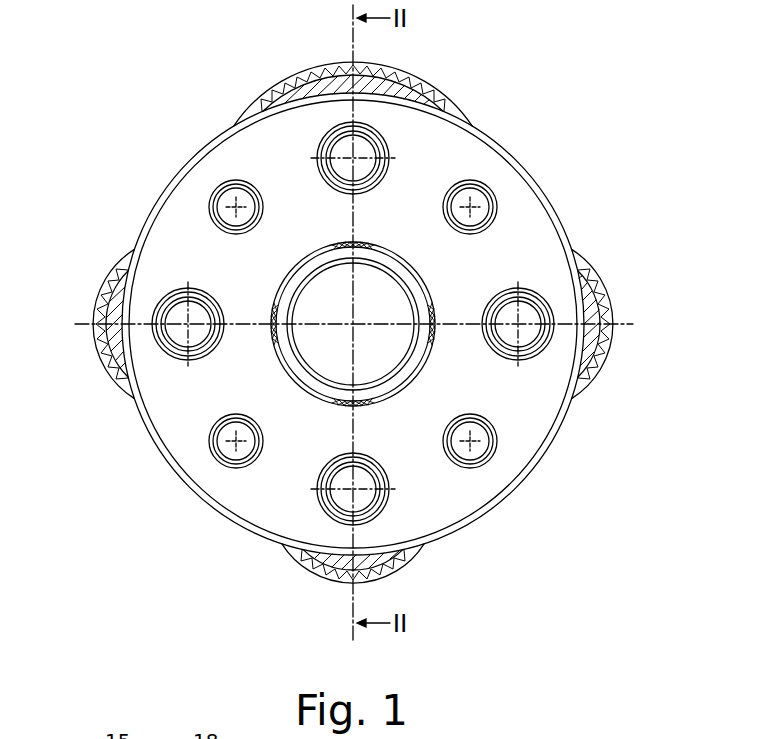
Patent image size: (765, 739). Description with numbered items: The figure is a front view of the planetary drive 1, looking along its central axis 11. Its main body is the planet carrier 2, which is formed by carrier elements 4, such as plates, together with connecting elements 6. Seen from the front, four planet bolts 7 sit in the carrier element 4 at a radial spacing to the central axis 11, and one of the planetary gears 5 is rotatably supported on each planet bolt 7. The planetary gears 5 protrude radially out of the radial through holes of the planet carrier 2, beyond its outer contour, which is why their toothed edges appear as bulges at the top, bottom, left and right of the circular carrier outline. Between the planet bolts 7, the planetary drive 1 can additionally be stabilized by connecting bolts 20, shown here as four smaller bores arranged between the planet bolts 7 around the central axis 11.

The planetary drive 1 is at (478, 83).
The planet carrier 2 is at (534, 253).
The carrier element 4 is at (457, 500).
The planetary gear 5 is at (318, 82).
The connecting element 6 is at (550, 184).
The planet bolt 7 is at (176, 290).
The central axis 11 is at (350, 327).
The connecting bolt 20 is at (218, 190).